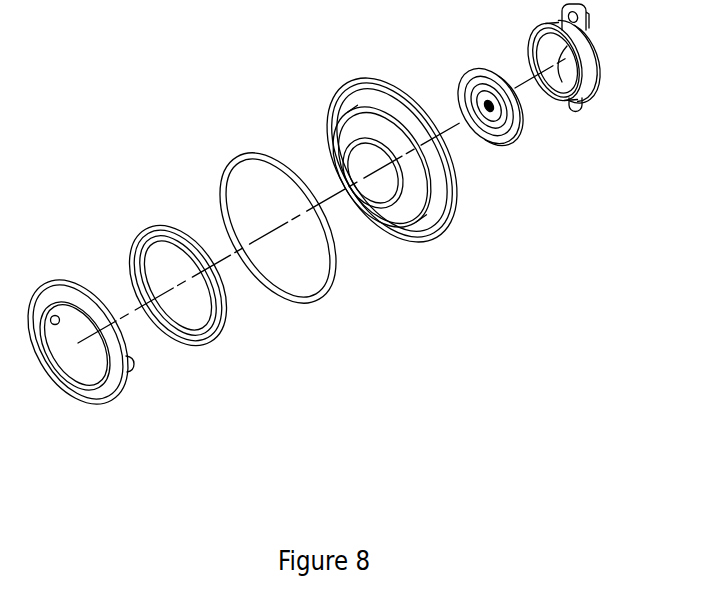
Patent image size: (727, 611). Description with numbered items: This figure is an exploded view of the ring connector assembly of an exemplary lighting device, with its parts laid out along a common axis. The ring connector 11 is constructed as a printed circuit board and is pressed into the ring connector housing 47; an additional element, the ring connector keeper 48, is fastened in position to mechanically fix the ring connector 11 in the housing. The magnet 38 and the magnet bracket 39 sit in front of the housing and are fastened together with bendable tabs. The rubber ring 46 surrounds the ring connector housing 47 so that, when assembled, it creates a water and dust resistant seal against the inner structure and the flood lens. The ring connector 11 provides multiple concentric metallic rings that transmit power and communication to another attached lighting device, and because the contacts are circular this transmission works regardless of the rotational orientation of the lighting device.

The magnet bracket 39 is at (110, 400).
The magnet 38 is at (215, 338).
The rubber ring 46 is at (330, 290).
The ring connector housing 47 is at (450, 225).
The ring connector 11 is at (512, 137).
The ring connector keeper 48 is at (587, 95).